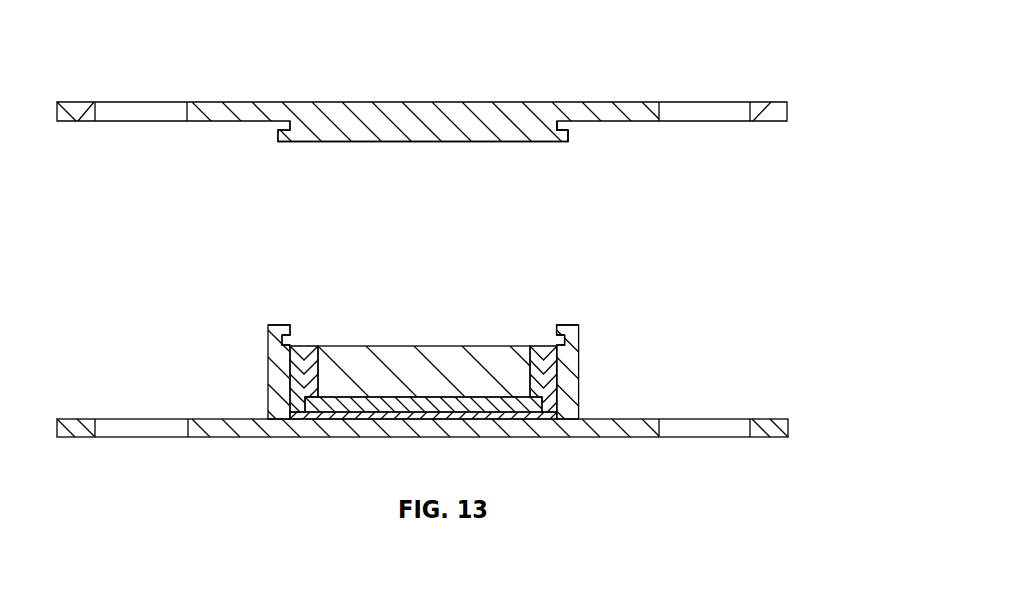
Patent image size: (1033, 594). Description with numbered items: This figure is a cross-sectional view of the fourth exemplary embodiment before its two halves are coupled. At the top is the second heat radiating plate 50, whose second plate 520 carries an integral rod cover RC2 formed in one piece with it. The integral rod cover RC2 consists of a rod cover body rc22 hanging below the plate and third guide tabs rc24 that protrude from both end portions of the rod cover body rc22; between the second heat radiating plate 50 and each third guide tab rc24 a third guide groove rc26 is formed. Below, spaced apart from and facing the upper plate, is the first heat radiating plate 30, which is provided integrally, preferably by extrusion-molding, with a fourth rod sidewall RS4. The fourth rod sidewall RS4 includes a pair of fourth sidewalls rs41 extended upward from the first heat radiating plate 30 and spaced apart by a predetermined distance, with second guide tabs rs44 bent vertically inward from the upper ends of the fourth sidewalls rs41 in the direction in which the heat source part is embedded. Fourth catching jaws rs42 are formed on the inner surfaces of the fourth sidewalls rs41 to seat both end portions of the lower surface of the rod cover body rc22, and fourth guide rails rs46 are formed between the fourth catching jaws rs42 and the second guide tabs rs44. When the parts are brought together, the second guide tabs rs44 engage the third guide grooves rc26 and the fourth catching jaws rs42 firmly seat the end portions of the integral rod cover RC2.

The second heat radiating plate 50 is at (422, 110).
The second plate 520 is at (248, 100).
The rod cover body rc22 is at (417, 128).
The third guide tab rc24 is at (570, 141).
The third guide groove rc26 is at (560, 125).
The integral rod cover RC2 is at (648, 168).
The first heat radiating plate 30 is at (771, 460).
The fourth sidewall rs41 is at (566, 393).
The fourth catching jaw rs42 is at (553, 362).
The second guide tab rs44 is at (563, 322).
The fourth guide rail rs46 is at (566, 338).
The fourth rod sidewall RS4 is at (448, 368).